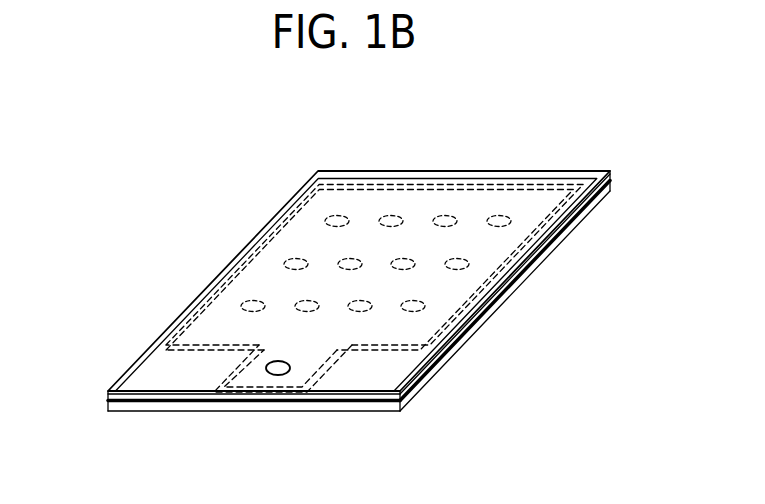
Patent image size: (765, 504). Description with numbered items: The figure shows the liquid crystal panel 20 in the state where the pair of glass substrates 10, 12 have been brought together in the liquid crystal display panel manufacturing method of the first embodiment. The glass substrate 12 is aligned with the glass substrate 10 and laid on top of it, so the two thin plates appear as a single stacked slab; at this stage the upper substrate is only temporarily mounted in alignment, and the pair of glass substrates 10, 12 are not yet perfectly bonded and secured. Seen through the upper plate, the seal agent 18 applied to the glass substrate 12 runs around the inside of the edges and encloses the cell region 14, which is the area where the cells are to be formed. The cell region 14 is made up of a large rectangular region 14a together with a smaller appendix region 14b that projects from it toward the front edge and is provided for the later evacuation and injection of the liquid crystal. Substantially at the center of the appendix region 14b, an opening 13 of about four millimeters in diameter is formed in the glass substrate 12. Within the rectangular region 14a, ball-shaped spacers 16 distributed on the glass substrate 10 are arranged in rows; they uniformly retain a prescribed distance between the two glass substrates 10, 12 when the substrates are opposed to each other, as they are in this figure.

The glass substrate 10 is at (423, 387).
The glass substrate 12 is at (467, 340).
The opening 13 is at (292, 368).
The cell region 14 is at (319, 291).
The rectangular region 14a is at (307, 238).
The appendix region 14b is at (255, 360).
The spacers 16 is at (425, 306).
The seal agent 18 is at (588, 217).
The liquid crystal panel 20 is at (508, 156).